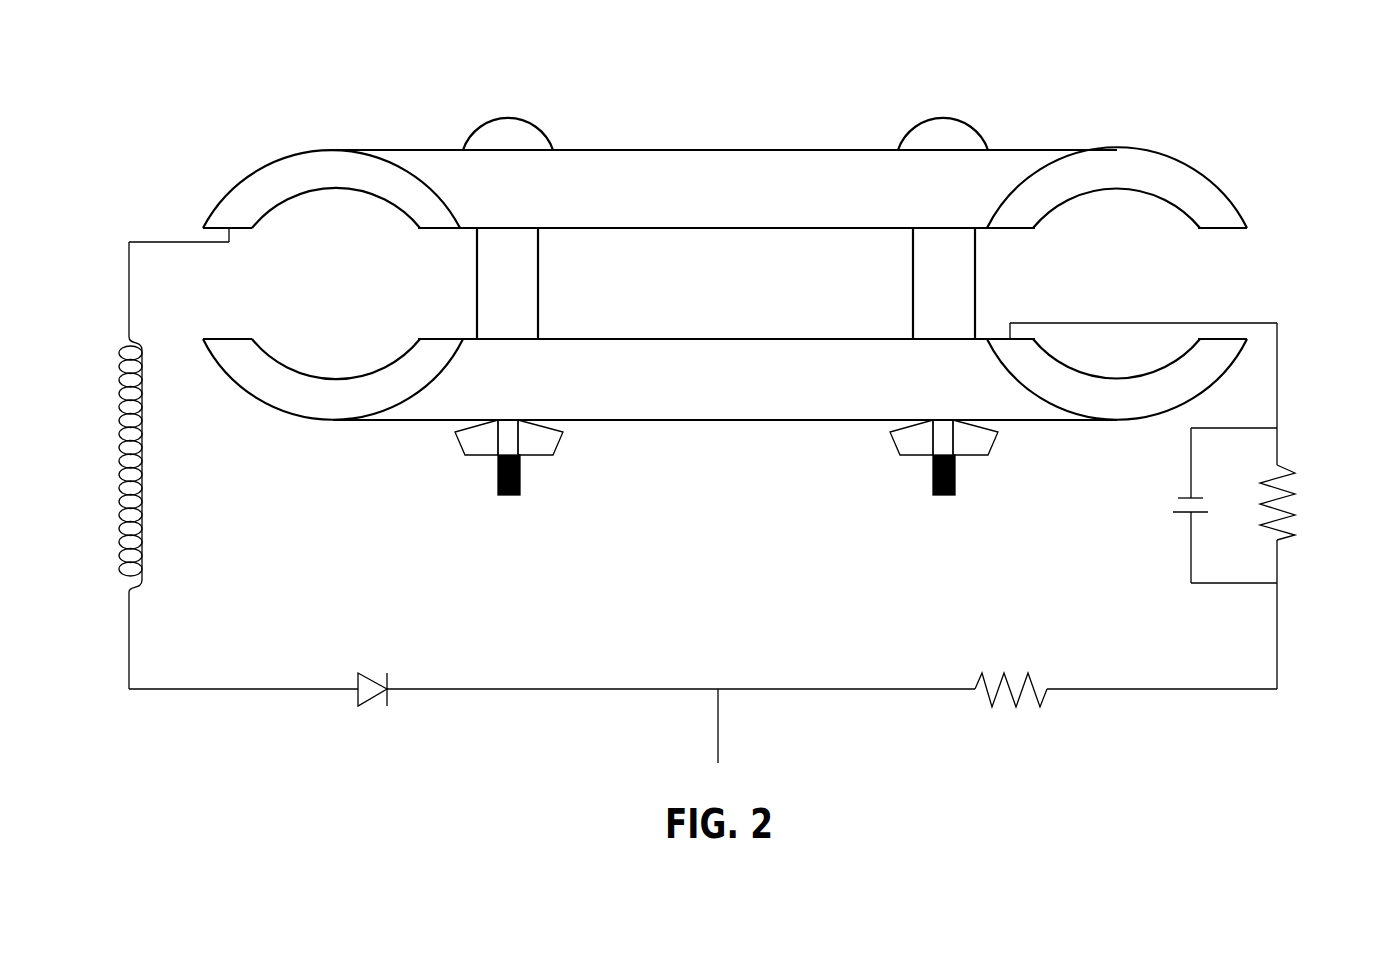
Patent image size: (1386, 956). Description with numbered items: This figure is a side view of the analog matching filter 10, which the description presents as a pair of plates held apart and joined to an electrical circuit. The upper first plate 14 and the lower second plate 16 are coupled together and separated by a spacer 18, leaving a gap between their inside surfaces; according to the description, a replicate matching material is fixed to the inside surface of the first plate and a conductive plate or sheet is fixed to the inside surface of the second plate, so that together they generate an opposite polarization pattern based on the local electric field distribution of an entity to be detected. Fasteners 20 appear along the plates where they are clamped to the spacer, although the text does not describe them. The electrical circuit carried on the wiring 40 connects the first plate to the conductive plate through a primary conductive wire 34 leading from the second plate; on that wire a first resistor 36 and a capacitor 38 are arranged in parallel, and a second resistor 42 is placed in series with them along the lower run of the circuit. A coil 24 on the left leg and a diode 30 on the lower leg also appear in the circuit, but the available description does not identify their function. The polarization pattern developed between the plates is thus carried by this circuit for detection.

The electrostatic precipitator apparatus 10 is at (1227, 133).
The first electrode plate 14 is at (780, 172).
The second electrode plate 16 is at (743, 365).
The spacer 18 is at (977, 279).
The fastener 20 is at (508, 127).
The inductor coil 24 is at (143, 467).
The diode 30 is at (462, 689).
The conductor 34 is at (1190, 322).
The resistor 36 is at (1287, 532).
The battery 38 is at (1178, 507).
The circuit wire 40 is at (1257, 689).
The resistor 42 is at (1047, 689).